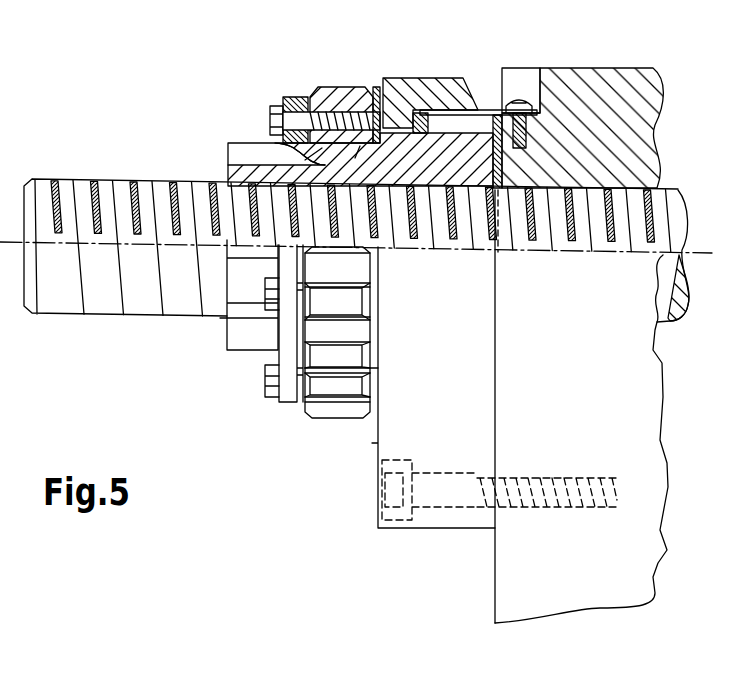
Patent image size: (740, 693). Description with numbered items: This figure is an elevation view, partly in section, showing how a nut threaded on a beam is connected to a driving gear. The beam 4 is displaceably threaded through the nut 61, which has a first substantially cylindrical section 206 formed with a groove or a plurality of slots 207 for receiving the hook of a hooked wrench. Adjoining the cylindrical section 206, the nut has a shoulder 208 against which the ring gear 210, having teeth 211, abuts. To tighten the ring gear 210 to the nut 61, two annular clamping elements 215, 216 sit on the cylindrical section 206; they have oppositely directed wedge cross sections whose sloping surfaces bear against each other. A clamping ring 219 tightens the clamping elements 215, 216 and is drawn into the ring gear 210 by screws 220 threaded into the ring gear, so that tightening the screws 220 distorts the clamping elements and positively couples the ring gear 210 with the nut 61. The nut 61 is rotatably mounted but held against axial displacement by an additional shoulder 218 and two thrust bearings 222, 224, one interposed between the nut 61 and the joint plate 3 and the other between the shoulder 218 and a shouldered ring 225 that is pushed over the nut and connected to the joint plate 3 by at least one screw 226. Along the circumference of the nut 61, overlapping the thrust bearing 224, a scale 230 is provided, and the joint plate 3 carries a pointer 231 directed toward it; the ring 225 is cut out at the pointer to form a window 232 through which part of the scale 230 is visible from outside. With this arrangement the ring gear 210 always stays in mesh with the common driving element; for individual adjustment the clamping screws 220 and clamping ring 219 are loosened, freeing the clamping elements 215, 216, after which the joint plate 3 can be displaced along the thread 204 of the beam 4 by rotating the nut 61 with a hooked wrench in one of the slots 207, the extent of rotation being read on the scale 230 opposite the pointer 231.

The joint plate 3 is at (592, 86).
The beam 4 is at (62, 178).
The nut 61 is at (226, 183).
The thread 204 is at (103, 186).
The cylindrical section 206 is at (376, 130).
The slots 207 is at (240, 150).
The shoulder 208 is at (377, 94).
The ring gear 210 is at (323, 82).
The tooth 211 is at (345, 88).
The annular clamping element 215 is at (314, 164).
The annular clamping element 216 is at (361, 165).
The additional shoulder 218 is at (440, 130).
The clamping ring 219 is at (290, 100).
The screws 220 is at (272, 114).
The thrust bearing 222 is at (419, 80).
The thrust bearing 224 is at (503, 163).
The shouldered ring 225 is at (387, 442).
The screw 226 is at (382, 490).
The scale 230 is at (481, 108).
The pointer 231 is at (508, 110).
The window 232 is at (464, 82).